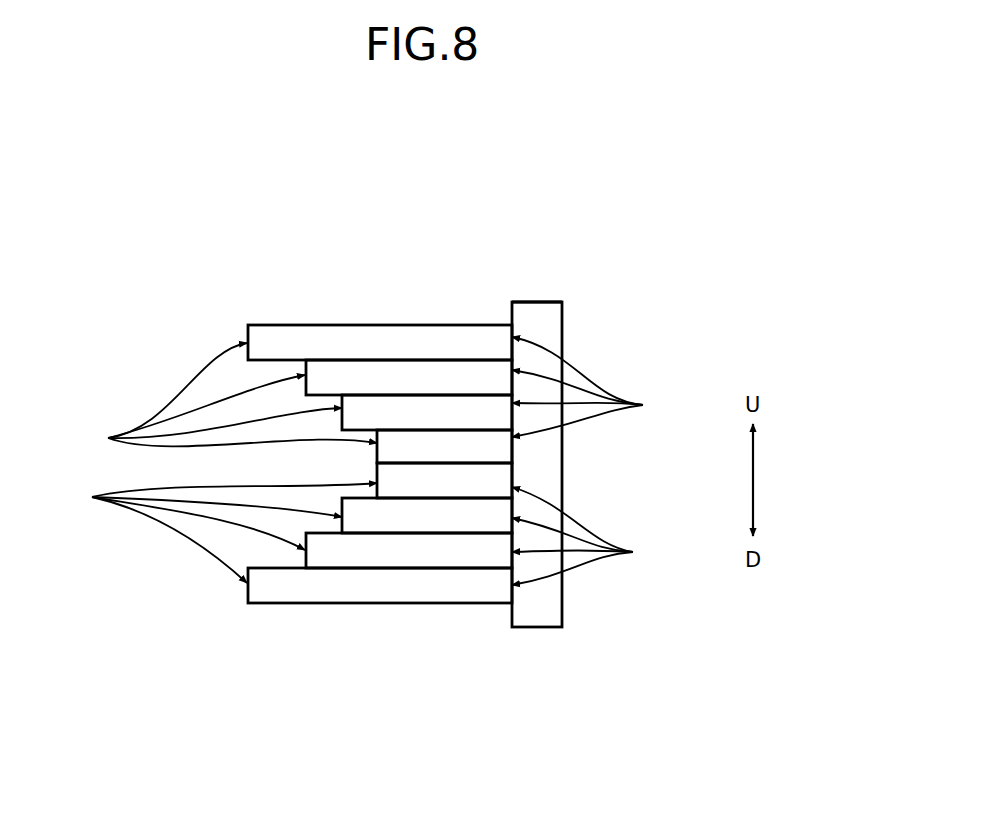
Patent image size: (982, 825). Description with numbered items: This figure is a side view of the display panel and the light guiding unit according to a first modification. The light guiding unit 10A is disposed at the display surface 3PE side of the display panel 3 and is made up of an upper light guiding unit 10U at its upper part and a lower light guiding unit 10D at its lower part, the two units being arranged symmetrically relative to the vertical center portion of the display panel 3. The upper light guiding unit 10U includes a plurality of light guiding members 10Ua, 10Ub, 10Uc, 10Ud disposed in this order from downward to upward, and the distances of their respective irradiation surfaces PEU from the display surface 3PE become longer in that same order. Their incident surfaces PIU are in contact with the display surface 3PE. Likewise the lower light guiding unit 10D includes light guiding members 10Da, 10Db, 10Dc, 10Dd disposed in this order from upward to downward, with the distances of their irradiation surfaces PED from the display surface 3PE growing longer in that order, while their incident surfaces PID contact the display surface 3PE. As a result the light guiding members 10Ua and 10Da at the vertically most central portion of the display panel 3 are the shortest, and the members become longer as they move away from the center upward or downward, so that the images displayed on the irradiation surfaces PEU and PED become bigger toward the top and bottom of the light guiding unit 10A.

The light guiding unit 10A is at (210, 207).
The upper light guiding unit 10U is at (577, 195).
The light guiding member 10Ua is at (412, 445).
The light guiding member 10Ub is at (437, 412).
The light guiding member 10Uc is at (450, 380).
The light guiding member 10Ud is at (472, 335).
The lower light guiding unit 10D is at (575, 740).
The light guiding member 10Da is at (408, 487).
The light guiding member 10Db is at (435, 520).
The light guiding member 10Dc is at (447, 553).
The light guiding member 10Dd is at (488, 590).
The display panel 3 is at (562, 314).
The display surface 3PE is at (505, 312).
The irradiation surfaces PEU is at (214, 397).
The irradiation surfaces PED is at (207, 533).
The incident surfaces PIU is at (599, 387).
The incident surfaces PID is at (594, 536).